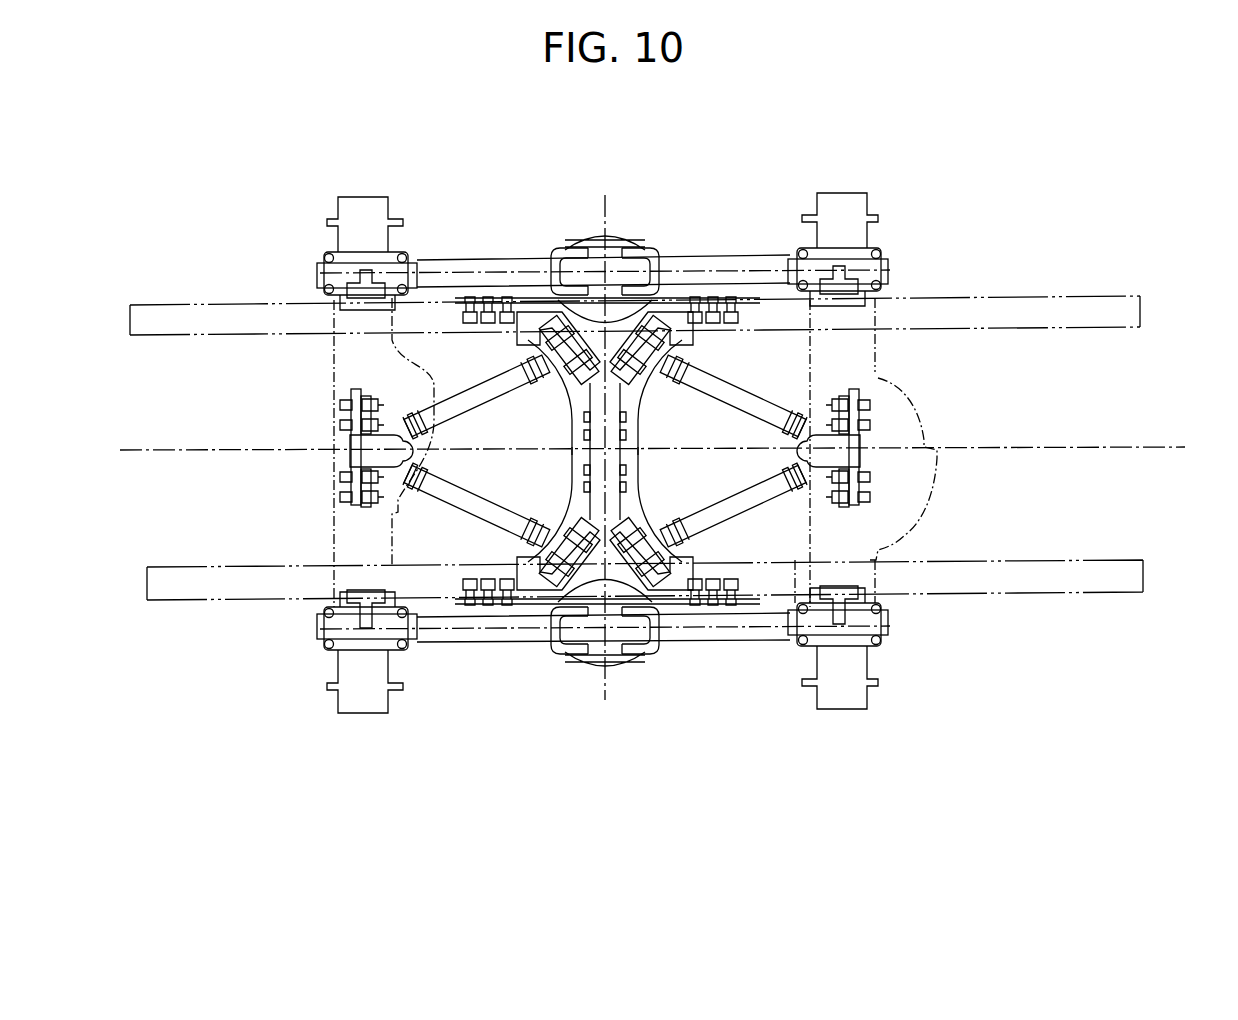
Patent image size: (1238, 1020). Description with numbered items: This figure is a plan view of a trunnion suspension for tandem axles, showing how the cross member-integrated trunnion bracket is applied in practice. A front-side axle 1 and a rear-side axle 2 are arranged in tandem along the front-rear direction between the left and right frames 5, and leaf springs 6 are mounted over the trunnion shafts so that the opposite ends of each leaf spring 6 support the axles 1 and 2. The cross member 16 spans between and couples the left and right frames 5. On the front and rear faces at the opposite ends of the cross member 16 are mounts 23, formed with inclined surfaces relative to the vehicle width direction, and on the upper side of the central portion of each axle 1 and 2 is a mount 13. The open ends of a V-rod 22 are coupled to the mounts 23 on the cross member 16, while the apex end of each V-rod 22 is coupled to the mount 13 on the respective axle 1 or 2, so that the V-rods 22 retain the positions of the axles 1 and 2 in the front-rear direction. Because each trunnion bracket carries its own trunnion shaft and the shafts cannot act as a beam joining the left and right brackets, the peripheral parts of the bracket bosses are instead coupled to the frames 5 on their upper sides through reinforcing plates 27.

The axle 1 is at (336, 546).
The axle 2 is at (878, 550).
The frame 5 is at (1077, 313).
The leaf spring 6 is at (765, 260).
The mount 13 is at (333, 393).
The cross member 16 is at (568, 437).
The V-rod 22 is at (466, 398).
The mount 23 is at (555, 365).
The reinforcing plate 27 is at (480, 603).